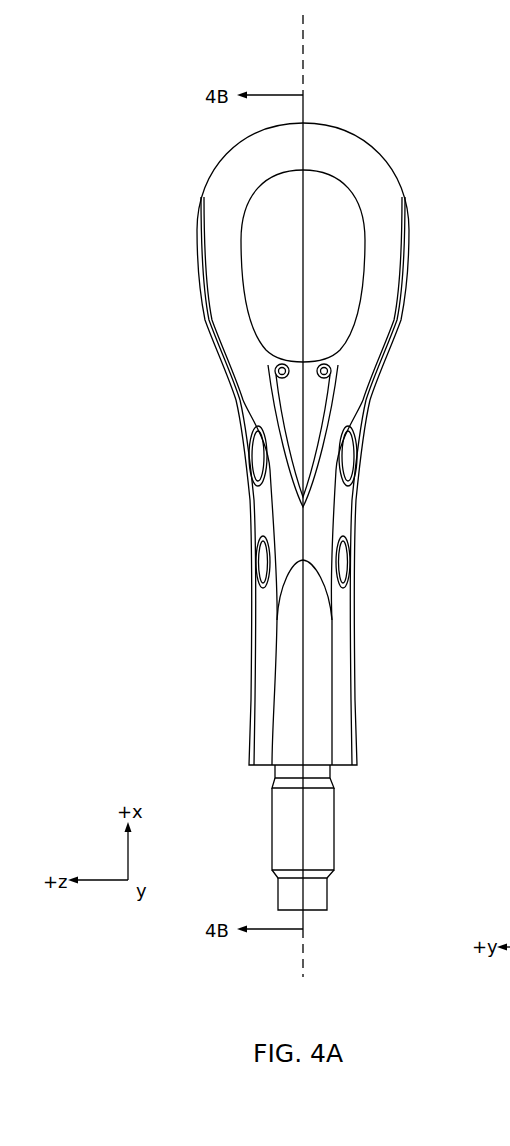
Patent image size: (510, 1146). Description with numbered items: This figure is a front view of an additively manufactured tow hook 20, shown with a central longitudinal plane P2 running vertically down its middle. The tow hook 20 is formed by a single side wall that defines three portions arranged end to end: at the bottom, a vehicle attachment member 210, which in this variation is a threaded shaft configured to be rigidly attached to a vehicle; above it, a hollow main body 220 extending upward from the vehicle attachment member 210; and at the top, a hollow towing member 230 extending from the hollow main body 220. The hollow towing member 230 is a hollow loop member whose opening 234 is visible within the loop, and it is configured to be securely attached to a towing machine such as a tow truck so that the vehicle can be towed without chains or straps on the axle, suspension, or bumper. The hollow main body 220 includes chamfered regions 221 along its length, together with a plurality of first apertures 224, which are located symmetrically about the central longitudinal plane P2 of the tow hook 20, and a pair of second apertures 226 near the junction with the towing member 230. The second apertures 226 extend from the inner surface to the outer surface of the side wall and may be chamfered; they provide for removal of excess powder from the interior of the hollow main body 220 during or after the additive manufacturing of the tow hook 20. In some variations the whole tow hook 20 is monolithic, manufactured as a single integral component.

The tow hook 20 is at (413, 124).
The central longitudinal plane P2 is at (304, 52).
The hollow towing member 230 is at (170, 251).
The opening in head 234 is at (290, 276).
The second apertures 226 is at (276, 366).
The hollow main body 220 is at (226, 498).
The chamfered regions 221 is at (310, 420).
The first apertures 224 is at (258, 460).
The vehicle attachment member 210 is at (257, 836).